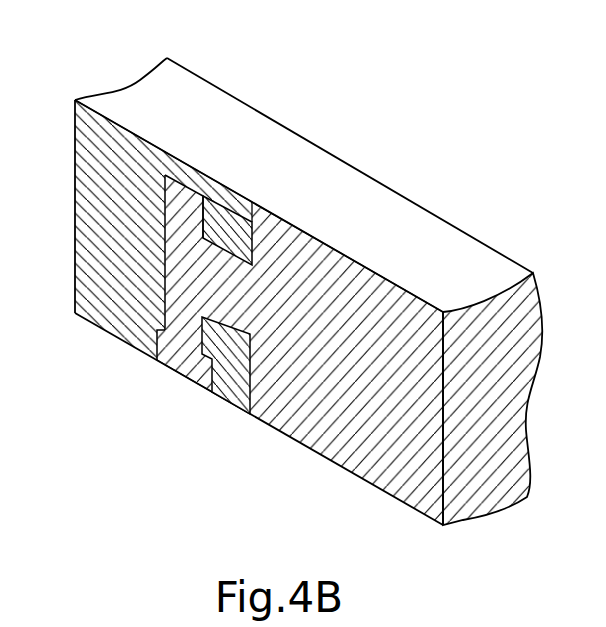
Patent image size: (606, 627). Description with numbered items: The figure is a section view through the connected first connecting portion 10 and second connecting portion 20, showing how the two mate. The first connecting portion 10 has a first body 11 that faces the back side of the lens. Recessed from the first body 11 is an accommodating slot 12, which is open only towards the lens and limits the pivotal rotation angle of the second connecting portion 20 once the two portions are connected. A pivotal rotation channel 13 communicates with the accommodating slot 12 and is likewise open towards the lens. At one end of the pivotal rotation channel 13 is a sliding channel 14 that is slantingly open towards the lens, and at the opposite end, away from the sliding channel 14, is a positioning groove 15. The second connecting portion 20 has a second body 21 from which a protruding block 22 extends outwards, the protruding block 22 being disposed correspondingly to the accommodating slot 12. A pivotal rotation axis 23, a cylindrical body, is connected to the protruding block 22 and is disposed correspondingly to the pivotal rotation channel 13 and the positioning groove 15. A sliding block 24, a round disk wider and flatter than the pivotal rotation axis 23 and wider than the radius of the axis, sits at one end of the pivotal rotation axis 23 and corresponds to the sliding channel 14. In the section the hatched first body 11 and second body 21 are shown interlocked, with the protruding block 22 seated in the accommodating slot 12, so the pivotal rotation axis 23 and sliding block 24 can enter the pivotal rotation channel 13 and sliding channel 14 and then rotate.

The first connecting portion 10 is at (258, 106).
The first body 11 is at (112, 189).
The accommodating slot 12 is at (229, 252).
The pivotal rotation channel 13 is at (164, 264).
The sliding channel 14 is at (157, 343).
The positioning groove 15 is at (112, 190).
The second connecting portion 20 is at (450, 222).
The second body 21 is at (407, 293).
The protruding block 22 is at (230, 290).
The pivotal rotation axis 23 is at (182, 277).
The sliding block 24 is at (183, 362).